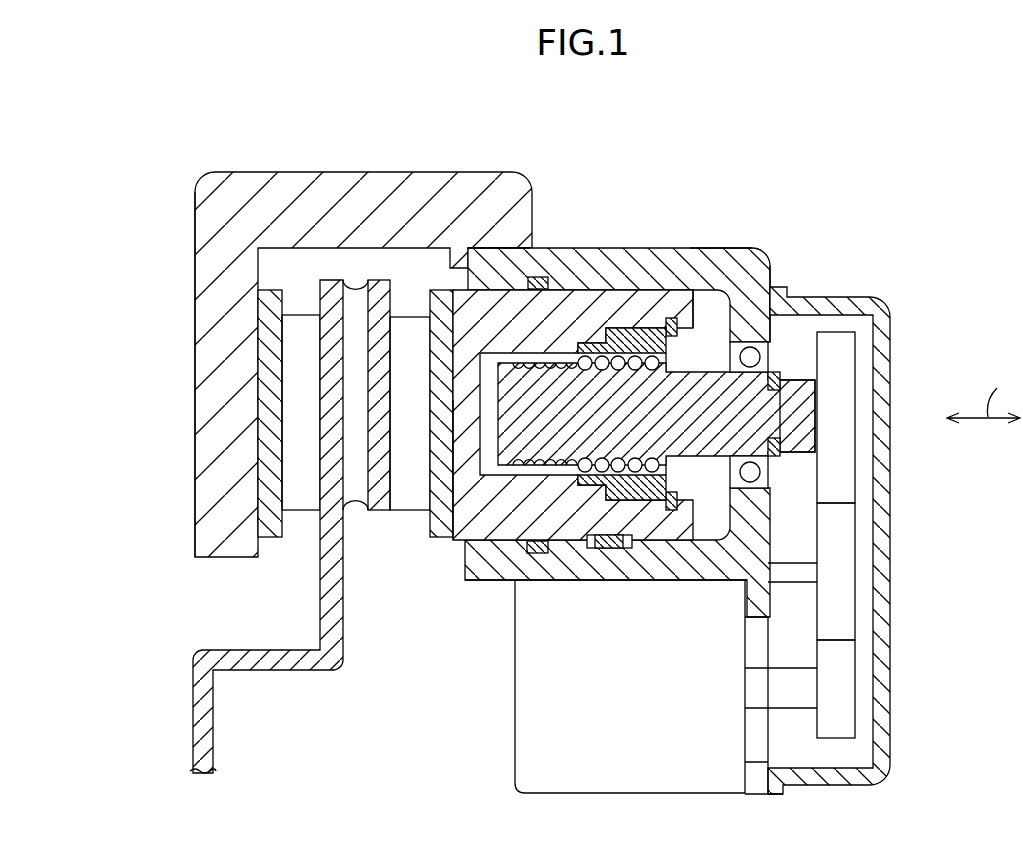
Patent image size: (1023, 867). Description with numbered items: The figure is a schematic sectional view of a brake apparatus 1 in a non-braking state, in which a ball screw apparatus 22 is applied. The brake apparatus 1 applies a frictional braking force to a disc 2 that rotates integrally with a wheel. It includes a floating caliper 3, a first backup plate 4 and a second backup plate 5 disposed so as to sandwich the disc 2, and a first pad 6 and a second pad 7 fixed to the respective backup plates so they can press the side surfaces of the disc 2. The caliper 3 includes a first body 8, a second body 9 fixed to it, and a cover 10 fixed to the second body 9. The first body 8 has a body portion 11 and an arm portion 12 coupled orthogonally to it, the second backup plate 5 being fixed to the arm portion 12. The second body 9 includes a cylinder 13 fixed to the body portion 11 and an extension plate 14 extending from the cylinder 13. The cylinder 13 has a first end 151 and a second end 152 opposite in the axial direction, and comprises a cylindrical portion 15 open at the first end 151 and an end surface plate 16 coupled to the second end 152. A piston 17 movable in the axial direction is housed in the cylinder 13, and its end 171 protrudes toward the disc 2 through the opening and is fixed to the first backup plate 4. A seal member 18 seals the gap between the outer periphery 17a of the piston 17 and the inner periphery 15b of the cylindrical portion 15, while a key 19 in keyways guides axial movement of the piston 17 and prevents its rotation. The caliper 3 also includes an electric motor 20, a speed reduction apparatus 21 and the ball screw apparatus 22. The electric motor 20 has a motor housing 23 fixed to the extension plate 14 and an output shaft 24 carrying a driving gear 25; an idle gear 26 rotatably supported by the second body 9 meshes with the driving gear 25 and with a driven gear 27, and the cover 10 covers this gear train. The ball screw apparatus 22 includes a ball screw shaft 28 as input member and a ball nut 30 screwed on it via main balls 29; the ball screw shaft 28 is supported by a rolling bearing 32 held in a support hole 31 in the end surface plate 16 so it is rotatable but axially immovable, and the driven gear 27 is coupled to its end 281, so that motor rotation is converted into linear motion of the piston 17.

The brake apparatus 1 is at (578, 476).
The disc 2 is at (355, 288).
The floating caliper 3 is at (334, 435).
The first backup plate 4 is at (440, 298).
The second backup plate 5 is at (272, 290).
The first pad 6 is at (408, 318).
The second pad 7 is at (298, 315).
The first body 8 is at (334, 331).
The second body 9 is at (625, 395).
The cover 10 is at (855, 297).
The body portion 11 is at (334, 333).
The arm portion 12 is at (196, 455).
The cylinder 13 is at (625, 395).
The extension plate 14 is at (755, 795).
The cylindrical portion 15 is at (625, 395).
The inner periphery 15b is at (558, 541).
The end surface plate 16 is at (752, 300).
The piston 17 is at (558, 432).
The outer periphery 17a is at (583, 548).
The seal member 18 is at (533, 553).
The key 19 is at (612, 548).
The electric motor 20 is at (730, 594).
The speed reduction apparatus 21 is at (881, 535).
The ball screw apparatus 22 is at (672, 627).
The motor housing 23 is at (560, 775).
The output shaft 24 is at (788, 696).
The driving gear 25 is at (848, 687).
The idle gear 26 is at (850, 588).
The driven gear 27 is at (845, 471).
The ball screw shaft 28 is at (723, 336).
The main balls 29 is at (667, 360).
The ball nut 30 is at (640, 335).
The support hole 31 is at (803, 540).
The rolling bearing 32 is at (762, 360).
The first end 151 is at (470, 250).
The second end 152 is at (738, 248).
The end 171 is at (457, 497).
The end 281 is at (798, 381).